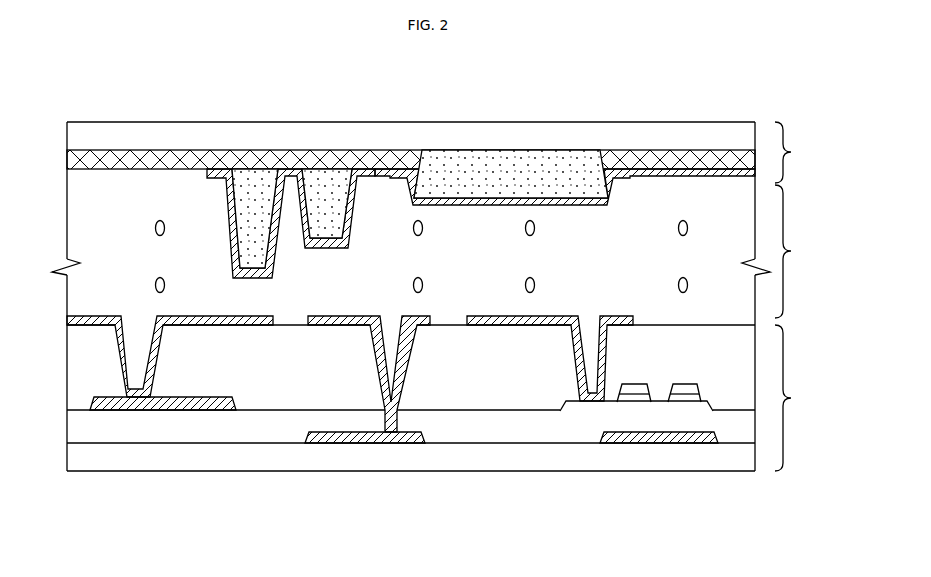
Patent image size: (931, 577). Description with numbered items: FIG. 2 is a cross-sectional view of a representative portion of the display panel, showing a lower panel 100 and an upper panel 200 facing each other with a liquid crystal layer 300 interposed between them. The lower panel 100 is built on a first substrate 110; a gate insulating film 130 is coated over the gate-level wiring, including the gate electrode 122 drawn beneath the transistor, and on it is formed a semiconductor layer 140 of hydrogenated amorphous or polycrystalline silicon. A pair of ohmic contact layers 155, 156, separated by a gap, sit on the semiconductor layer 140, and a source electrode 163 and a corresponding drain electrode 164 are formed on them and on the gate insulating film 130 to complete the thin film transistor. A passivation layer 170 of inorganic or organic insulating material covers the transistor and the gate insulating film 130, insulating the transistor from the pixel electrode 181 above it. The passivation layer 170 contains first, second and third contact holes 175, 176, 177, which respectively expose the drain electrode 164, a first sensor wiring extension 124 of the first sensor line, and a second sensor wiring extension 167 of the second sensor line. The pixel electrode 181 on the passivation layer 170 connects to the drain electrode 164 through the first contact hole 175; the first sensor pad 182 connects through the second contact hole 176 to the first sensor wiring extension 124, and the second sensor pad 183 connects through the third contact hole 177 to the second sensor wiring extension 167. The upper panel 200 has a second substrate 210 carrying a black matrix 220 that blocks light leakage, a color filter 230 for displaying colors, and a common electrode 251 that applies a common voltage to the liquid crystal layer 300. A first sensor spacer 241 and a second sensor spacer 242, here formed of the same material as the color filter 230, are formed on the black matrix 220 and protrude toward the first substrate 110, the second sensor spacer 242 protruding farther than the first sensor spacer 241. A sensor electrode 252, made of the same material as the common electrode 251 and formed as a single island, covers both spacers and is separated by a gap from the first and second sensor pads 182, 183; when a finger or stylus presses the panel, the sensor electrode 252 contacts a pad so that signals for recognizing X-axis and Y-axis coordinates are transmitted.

The lower panel 100 is at (445, 425).
The first substrate 110 is at (278, 453).
The gate electrode 122 is at (630, 444).
The first sensor wiring extension 124 is at (362, 445).
The gate insulating film 130 is at (227, 430).
The semiconductor layer 140 is at (673, 407).
The ohmic contact layer 155 is at (693, 397).
The ohmic contact layer 156 is at (623, 396).
The source electrode 163 is at (688, 388).
The drain electrode 164 is at (632, 388).
The second sensor wiring extension 167 is at (150, 411).
The passivation layer 170 is at (443, 395).
The first contact hole 175 is at (588, 300).
The second contact hole 176 is at (387, 303).
The third contact hole 177 is at (133, 303).
The pixel electrode 181 is at (512, 326).
The first sensor pad 182 is at (330, 326).
The second sensor pad 183 is at (92, 326).
The upper panel 200 is at (445, 133).
The second substrate 210 is at (200, 140).
The black matrix 220 is at (143, 150).
The color filter 230 is at (477, 170).
The first sensor spacer 241 is at (327, 187).
The second sensor spacer 242 is at (250, 180).
The common electrode 251 is at (535, 195).
The sensor electrode 252 is at (373, 150).
The liquid crystal layer 300 is at (490, 251).